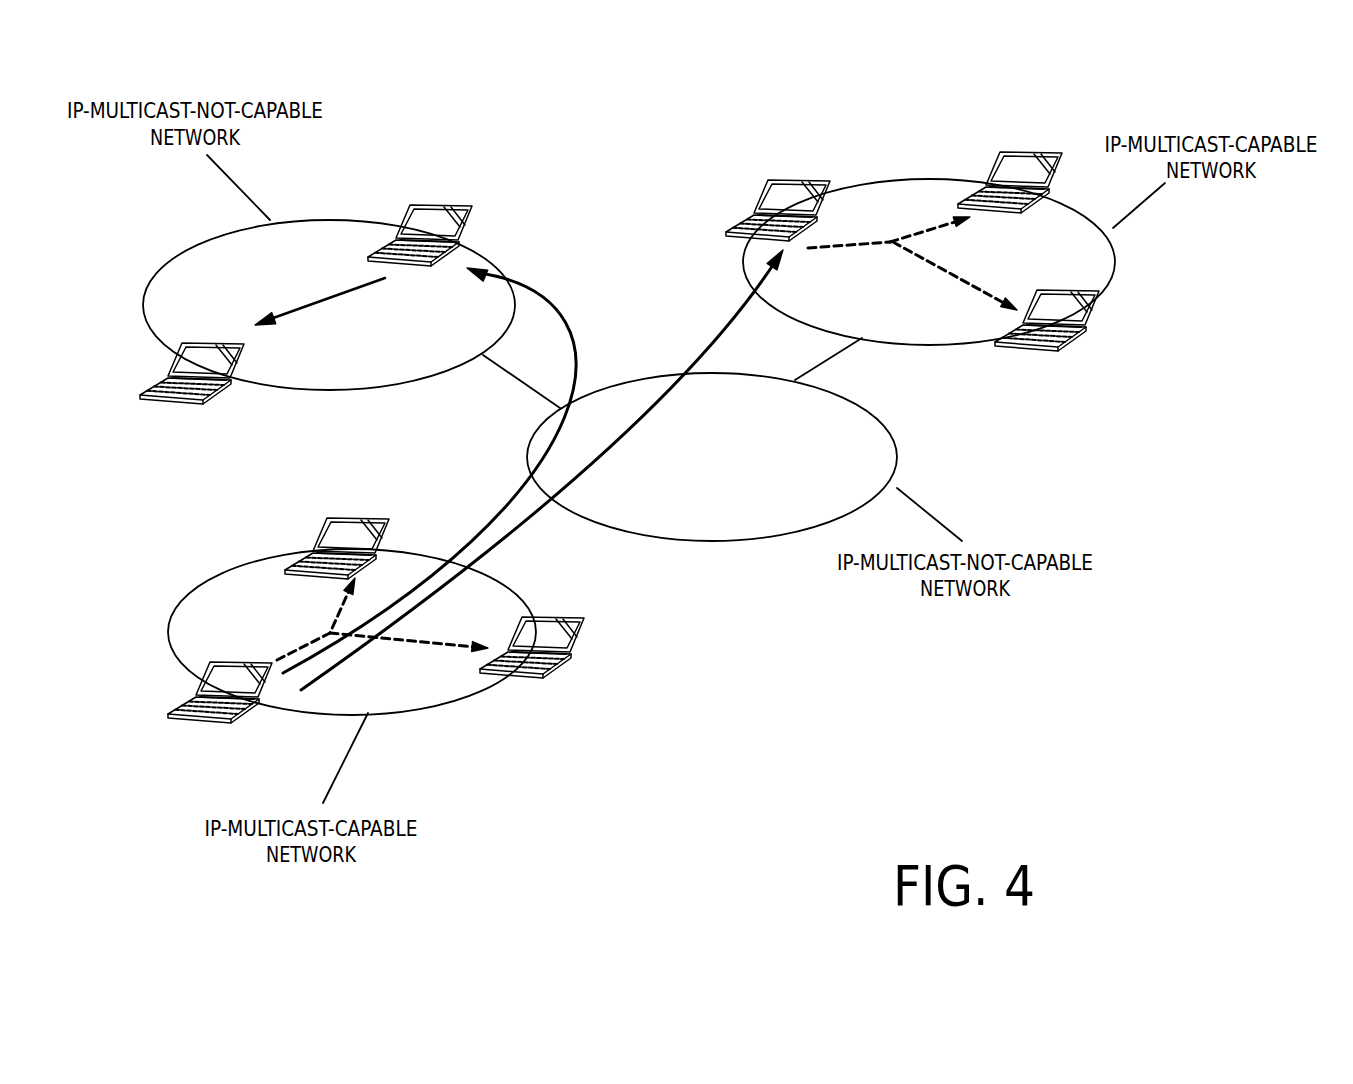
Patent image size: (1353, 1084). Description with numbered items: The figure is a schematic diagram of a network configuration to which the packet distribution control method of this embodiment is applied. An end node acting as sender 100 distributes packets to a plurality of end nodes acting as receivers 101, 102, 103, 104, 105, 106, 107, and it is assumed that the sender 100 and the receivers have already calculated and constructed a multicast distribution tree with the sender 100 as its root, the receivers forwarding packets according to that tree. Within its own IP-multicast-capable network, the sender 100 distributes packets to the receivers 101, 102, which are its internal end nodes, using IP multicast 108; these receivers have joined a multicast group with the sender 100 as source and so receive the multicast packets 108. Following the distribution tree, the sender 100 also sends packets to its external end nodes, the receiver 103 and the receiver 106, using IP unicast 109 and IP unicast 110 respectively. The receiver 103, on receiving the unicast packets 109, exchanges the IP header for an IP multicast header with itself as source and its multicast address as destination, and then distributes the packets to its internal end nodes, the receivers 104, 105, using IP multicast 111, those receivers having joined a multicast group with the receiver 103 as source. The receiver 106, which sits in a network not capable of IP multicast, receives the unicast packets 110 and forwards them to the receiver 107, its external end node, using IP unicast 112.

The sender 100 is at (195, 692).
The receiver 101 is at (570, 650).
The receiver 102 is at (312, 548).
The receiver 103 is at (757, 200).
The receiver 104 is at (990, 170).
The receiver 105 is at (1090, 317).
The receiver 106 is at (467, 233).
The receiver 107 is at (162, 373).
The IP multicast 108 is at (292, 635).
The IP unicast 109 is at (535, 555).
The IP unicast 110 is at (425, 577).
The IP multicast 111 is at (846, 225).
The IP unicast 112 is at (312, 295).